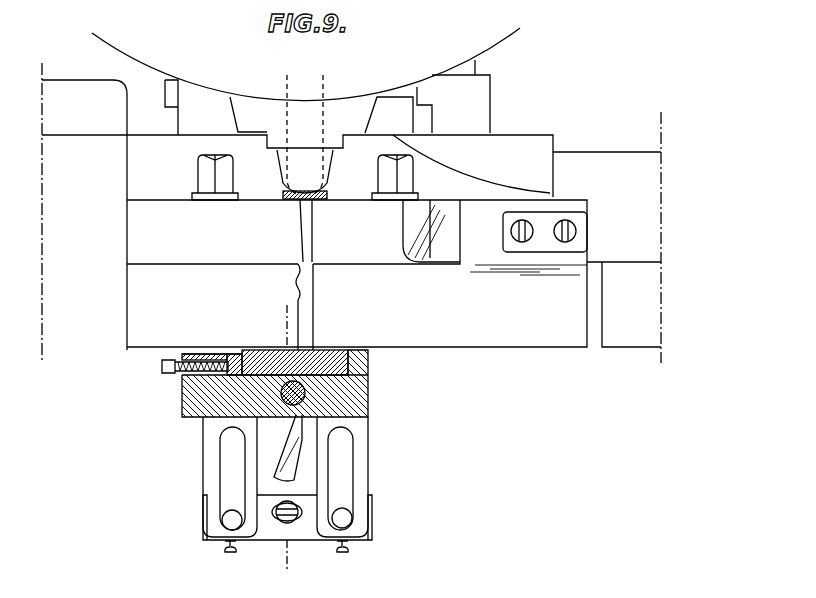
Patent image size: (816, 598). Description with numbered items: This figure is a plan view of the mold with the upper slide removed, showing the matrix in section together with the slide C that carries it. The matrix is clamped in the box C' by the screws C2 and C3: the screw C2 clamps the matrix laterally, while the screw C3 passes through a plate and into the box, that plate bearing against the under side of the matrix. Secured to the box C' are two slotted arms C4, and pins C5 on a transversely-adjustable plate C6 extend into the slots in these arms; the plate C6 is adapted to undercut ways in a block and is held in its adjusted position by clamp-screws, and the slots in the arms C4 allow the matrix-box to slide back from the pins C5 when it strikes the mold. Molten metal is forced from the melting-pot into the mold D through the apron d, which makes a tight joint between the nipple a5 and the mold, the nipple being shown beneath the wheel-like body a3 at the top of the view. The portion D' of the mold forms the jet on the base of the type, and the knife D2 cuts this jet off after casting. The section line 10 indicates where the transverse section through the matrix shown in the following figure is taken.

The grinding wheel a3 is at (306, 64).
The nipple a5 is at (305, 135).
The apron d is at (294, 191).
The portion of the mold D' is at (319, 231).
The mold D is at (314, 307).
The knife D2 is at (463, 259).
The section line 10 10 is at (284, 440).
The slide C is at (287, 363).
The screw C2 is at (186, 365).
The box C' is at (263, 383).
The screw C3 is at (297, 440).
The slotted arms C4 is at (377, 460).
The pins C5 is at (380, 517).
The transversely-adjustable plate C6 is at (368, 532).